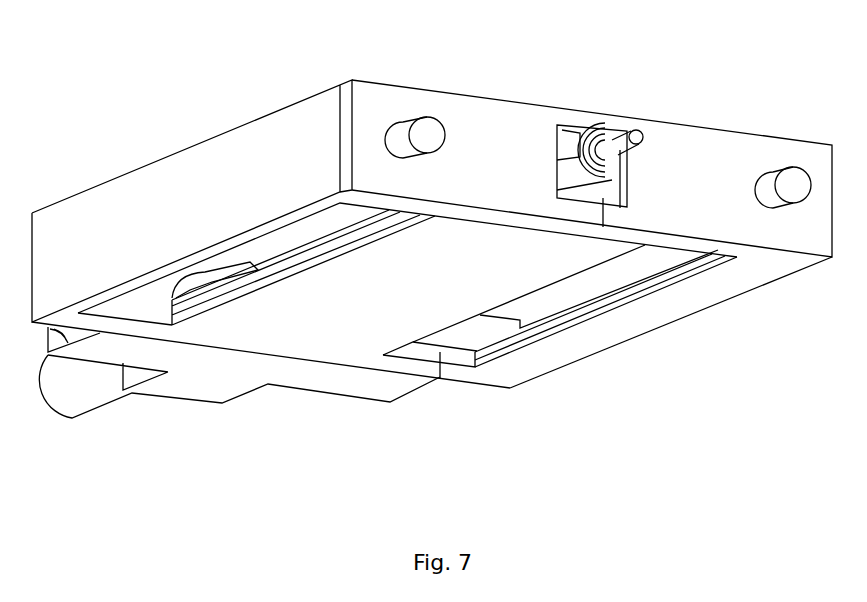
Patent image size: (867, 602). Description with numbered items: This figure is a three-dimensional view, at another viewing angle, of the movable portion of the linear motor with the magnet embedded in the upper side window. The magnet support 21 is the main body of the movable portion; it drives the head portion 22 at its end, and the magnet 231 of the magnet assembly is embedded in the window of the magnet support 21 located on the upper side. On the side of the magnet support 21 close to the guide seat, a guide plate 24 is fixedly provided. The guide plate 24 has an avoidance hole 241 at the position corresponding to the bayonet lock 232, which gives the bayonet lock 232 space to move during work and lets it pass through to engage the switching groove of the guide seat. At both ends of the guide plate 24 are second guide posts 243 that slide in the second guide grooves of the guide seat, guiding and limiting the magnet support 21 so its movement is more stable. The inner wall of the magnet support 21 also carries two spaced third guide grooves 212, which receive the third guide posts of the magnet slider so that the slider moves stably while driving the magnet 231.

The magnet support 21 is at (252, 163).
The third guide groove 212 is at (190, 292).
The head portion 22 is at (200, 387).
The magnet 231 is at (543, 298).
The bayonet lock 232 is at (636, 128).
The guide plate 24 is at (773, 148).
The avoidance hole 241 is at (603, 205).
The second guide post 243 is at (430, 118).